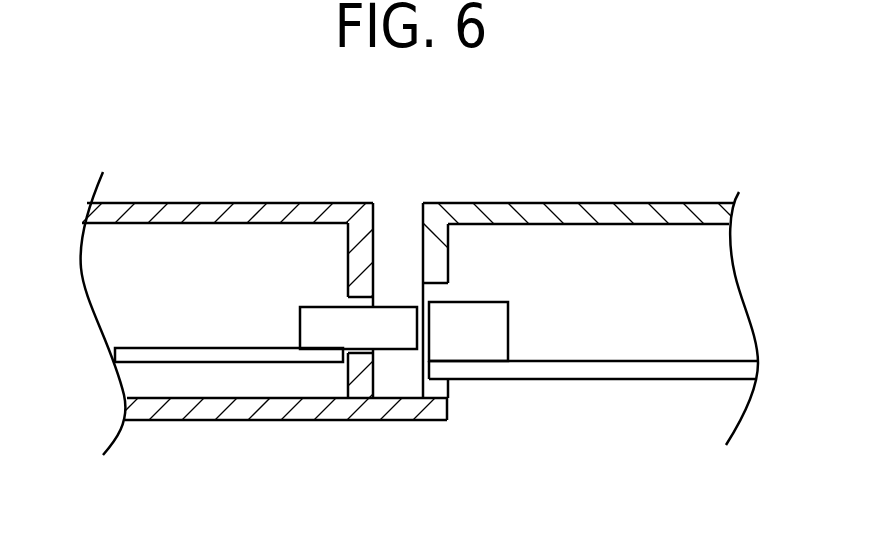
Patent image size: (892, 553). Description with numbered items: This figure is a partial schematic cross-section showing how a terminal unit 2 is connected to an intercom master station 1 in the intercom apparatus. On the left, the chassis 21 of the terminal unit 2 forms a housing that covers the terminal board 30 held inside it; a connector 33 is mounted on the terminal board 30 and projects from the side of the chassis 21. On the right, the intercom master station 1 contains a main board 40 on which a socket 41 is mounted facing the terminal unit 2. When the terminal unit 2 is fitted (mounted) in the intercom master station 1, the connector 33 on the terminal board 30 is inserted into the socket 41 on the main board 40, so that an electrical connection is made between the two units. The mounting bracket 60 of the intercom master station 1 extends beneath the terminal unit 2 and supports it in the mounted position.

The intercom master station 1 is at (594, 168).
The terminal unit 2 is at (207, 168).
The chassis 21 is at (272, 203).
The terminal board 30 is at (155, 353).
The connector 33 is at (300, 326).
The main board 40 is at (602, 373).
The socket 41 is at (497, 302).
The mounting bracket 60 is at (235, 405).